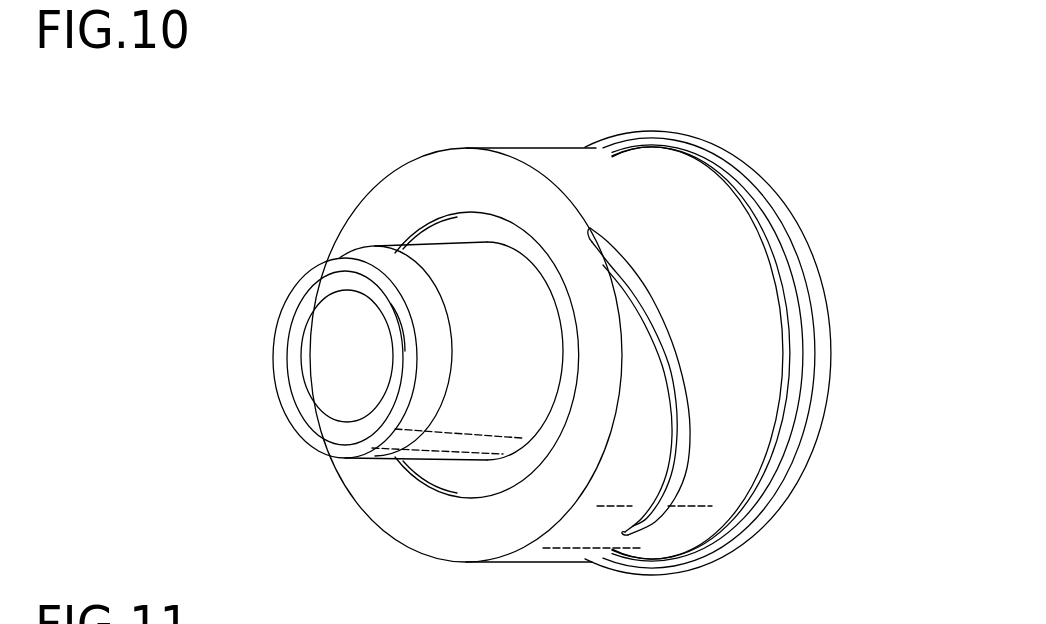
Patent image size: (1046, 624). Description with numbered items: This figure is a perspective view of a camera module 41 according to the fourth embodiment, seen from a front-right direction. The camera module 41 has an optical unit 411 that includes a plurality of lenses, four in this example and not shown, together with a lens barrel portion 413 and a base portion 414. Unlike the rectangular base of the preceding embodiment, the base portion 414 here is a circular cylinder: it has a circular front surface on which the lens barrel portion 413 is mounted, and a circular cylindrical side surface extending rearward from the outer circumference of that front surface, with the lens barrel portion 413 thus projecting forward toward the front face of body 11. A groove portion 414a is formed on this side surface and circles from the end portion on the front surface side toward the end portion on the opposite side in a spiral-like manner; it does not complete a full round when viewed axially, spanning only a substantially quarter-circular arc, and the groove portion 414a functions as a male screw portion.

The camera module 41 is at (351, 106).
The optical unit 411 is at (320, 182).
The lens barrel portion 413 is at (448, 268).
The base portion 414 is at (571, 172).
The groove portion 414a is at (665, 488).
The front face of body 11 is at (463, 178).